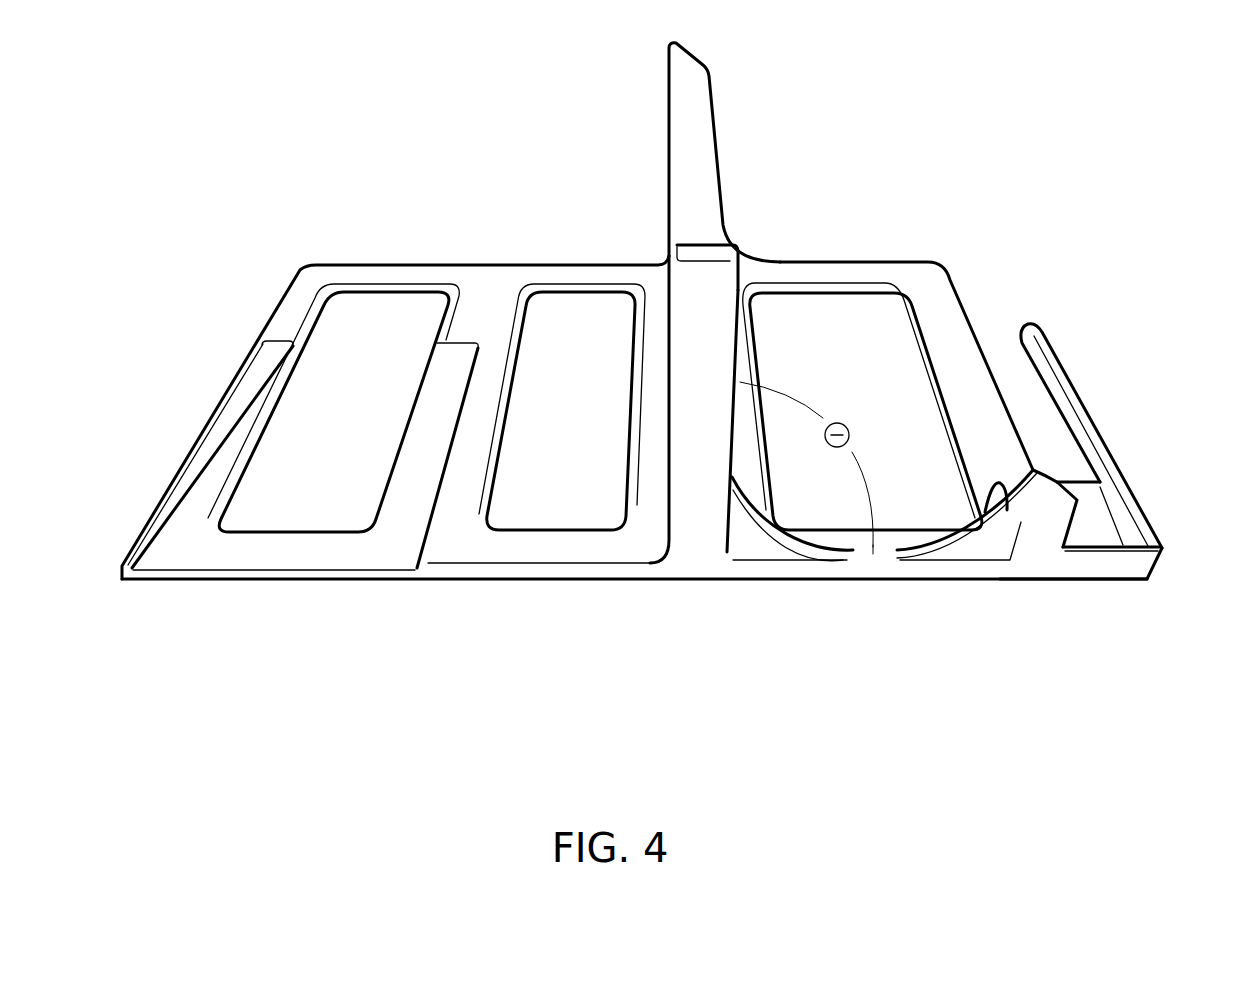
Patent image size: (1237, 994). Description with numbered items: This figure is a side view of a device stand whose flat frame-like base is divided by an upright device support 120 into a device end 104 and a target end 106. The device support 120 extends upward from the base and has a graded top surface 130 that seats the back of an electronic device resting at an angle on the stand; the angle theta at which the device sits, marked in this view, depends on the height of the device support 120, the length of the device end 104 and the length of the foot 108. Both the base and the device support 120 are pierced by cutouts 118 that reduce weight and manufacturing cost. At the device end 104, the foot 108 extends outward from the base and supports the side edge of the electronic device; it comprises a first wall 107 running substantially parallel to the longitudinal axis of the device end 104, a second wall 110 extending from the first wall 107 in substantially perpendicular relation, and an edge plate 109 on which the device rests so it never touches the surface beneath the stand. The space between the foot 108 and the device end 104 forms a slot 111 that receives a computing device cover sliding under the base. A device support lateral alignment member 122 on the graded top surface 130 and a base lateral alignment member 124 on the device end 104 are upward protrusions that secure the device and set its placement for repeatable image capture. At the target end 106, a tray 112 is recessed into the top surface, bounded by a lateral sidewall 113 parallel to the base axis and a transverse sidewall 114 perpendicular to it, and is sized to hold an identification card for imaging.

The device end 104 is at (887, 553).
The target end 106 is at (426, 271).
The first wall 107 is at (1127, 563).
The foot 108 is at (1135, 410).
The edge plate 109 is at (1103, 520).
The second wall 110 is at (1045, 335).
The slot 111 is at (1018, 375).
The tray 112 is at (254, 562).
The lateral sidewall 113 is at (460, 341).
The transverse sidewall 114 is at (448, 453).
The cutouts 118 is at (578, 306).
The device support 120 is at (693, 513).
The device support lateral alignment member 122 is at (702, 263).
The base lateral alignment member 124 is at (1040, 520).
The graded top surface 130 is at (700, 90).